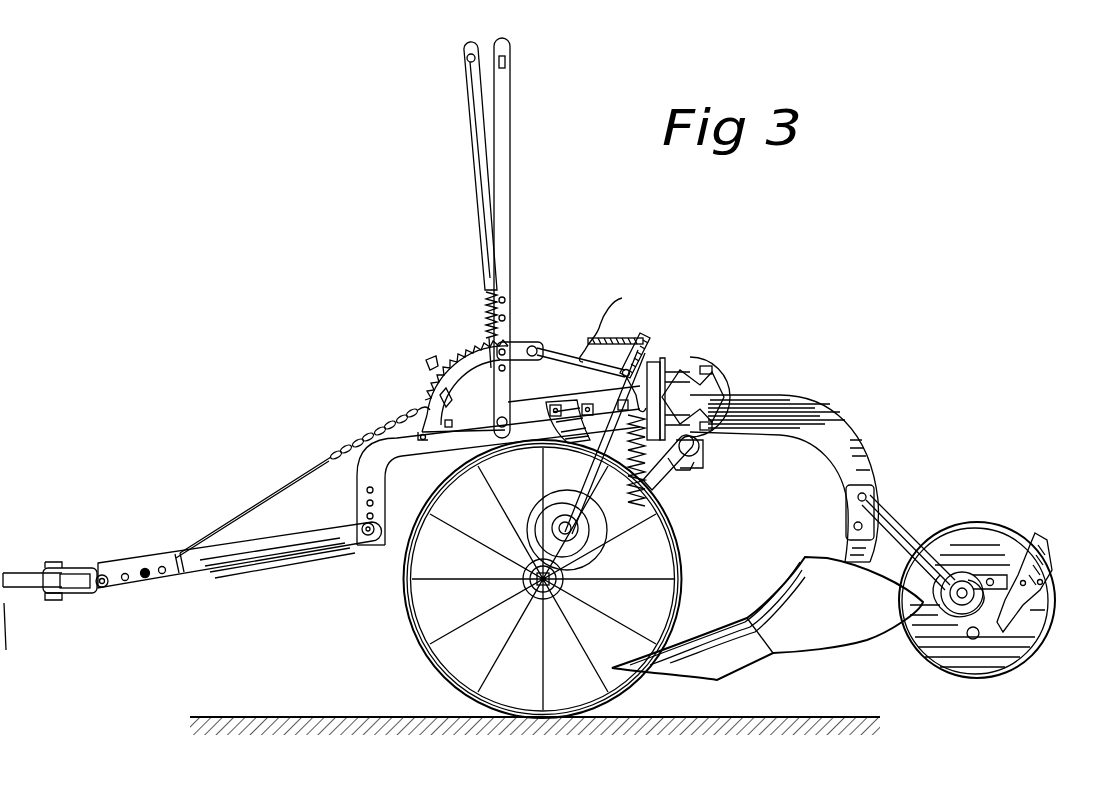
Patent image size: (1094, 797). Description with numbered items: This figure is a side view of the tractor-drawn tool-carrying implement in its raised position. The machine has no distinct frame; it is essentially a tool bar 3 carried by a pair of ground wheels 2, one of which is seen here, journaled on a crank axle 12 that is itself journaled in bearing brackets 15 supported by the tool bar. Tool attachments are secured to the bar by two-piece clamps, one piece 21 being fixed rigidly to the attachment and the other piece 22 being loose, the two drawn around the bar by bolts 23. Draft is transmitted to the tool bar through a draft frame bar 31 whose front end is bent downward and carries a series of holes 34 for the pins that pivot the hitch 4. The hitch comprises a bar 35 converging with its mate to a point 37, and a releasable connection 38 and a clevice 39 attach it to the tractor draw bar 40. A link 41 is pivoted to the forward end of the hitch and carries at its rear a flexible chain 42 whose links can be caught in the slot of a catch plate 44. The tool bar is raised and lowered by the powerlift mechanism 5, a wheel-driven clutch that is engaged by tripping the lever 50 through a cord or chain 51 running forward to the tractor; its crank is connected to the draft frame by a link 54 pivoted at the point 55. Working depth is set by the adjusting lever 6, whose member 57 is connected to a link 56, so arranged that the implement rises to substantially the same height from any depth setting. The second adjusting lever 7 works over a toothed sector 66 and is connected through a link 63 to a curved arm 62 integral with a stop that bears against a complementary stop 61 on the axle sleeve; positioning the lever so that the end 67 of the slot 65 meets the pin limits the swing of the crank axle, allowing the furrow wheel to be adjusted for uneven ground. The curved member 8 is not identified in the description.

The ground wheels 2 is at (683, 570).
The tool bar 3 is at (715, 389).
The hitch 4 is at (233, 568).
The powerlift mechanism 5 is at (595, 536).
The adjusting lever 6 is at (512, 203).
The adjusting lever 7 is at (476, 158).
The curved beam portion 8 is at (858, 460).
The crank axle 12 is at (652, 479).
The bearing brackets 15 is at (700, 452).
The clamp piece 21 is at (707, 365).
The clamp piece 22 is at (670, 367).
The bolts 23 is at (660, 356).
The draft frame bar 31 is at (425, 450).
The holes 34 is at (366, 490).
The hitch bar 35 is at (297, 547).
The point 37 is at (174, 577).
The releasable connection 38 is at (124, 572).
The clevice 39 is at (73, 570).
The tractor draw bar 40 is at (22, 577).
The link 41 is at (252, 506).
The flexible chain 42 is at (367, 437).
The catch plate 44 is at (446, 414).
The lever 50 is at (650, 334).
The cord or chain 51 is at (613, 338).
The link 54 is at (572, 400).
The pivot 55 is at (593, 460).
The link 56 is at (560, 353).
The member 57 is at (541, 345).
The stop 61 is at (696, 468).
The curved arm 62 is at (717, 427).
The link 63 is at (612, 342).
The slot 65 is at (432, 360).
The toothed sector 66 is at (477, 346).
The end of slot 67 is at (428, 366).